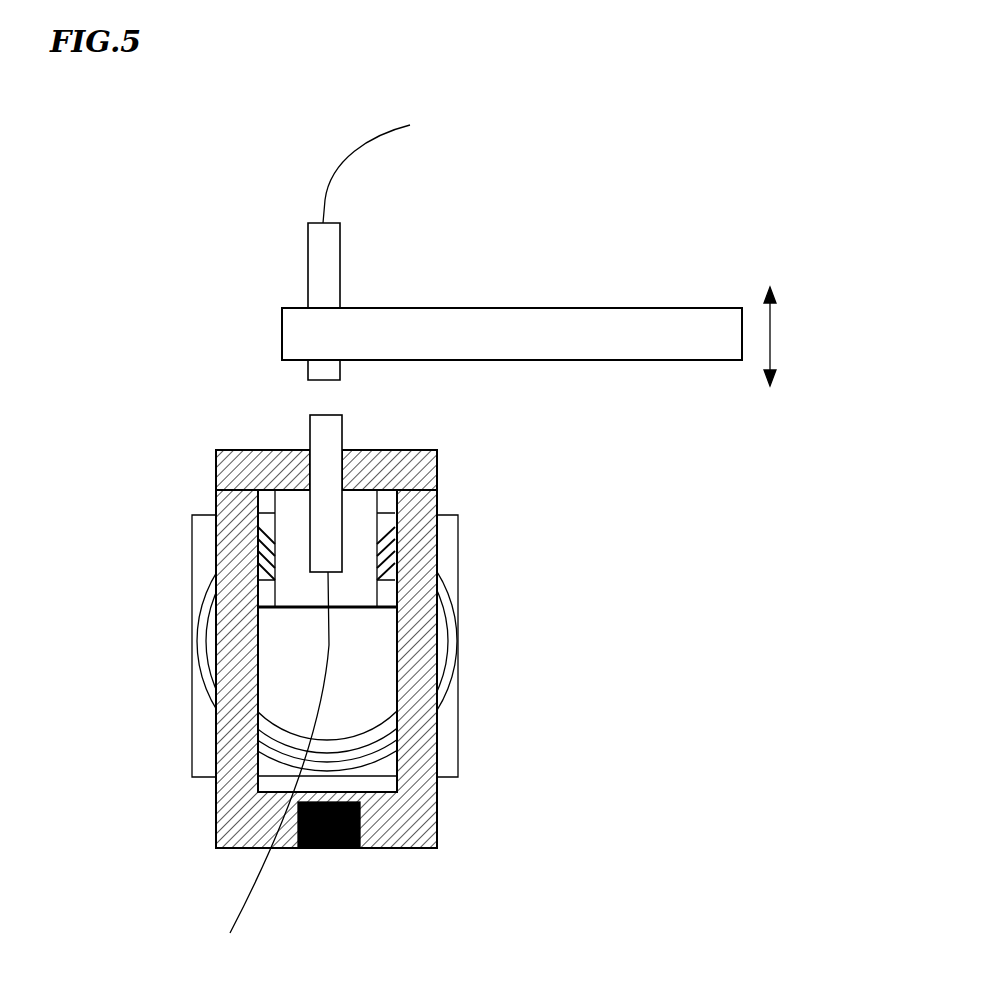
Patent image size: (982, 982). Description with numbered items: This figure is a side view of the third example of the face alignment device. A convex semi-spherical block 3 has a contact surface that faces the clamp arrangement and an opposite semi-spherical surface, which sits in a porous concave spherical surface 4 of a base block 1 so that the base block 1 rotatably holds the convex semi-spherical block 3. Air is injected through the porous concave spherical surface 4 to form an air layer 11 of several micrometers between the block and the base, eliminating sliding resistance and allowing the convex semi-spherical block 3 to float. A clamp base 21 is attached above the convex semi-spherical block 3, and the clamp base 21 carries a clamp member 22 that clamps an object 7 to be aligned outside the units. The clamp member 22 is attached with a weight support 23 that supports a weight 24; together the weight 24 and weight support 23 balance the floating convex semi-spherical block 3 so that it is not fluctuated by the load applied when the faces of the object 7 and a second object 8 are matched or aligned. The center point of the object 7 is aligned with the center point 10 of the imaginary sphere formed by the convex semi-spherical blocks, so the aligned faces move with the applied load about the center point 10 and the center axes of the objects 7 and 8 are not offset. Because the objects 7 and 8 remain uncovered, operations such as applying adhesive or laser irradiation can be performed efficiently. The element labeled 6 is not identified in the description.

The base block 1 is at (192, 553).
The convex semi-spherical block 3 is at (273, 683).
The porous concave spherical surface 4 is at (192, 617).
The arm 6 is at (282, 322).
The object 7 is at (308, 418).
The object 8 is at (341, 266).
The center point 10 is at (328, 645).
The air layer 11 is at (270, 744).
The clamp base 21 is at (437, 468).
The clamp member 22 is at (216, 450).
The weight support 23 is at (437, 757).
The weight 24 is at (362, 832).